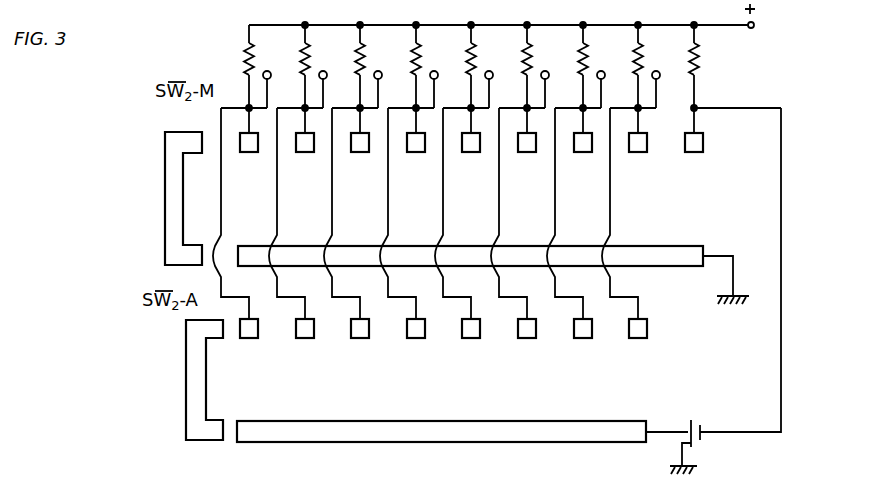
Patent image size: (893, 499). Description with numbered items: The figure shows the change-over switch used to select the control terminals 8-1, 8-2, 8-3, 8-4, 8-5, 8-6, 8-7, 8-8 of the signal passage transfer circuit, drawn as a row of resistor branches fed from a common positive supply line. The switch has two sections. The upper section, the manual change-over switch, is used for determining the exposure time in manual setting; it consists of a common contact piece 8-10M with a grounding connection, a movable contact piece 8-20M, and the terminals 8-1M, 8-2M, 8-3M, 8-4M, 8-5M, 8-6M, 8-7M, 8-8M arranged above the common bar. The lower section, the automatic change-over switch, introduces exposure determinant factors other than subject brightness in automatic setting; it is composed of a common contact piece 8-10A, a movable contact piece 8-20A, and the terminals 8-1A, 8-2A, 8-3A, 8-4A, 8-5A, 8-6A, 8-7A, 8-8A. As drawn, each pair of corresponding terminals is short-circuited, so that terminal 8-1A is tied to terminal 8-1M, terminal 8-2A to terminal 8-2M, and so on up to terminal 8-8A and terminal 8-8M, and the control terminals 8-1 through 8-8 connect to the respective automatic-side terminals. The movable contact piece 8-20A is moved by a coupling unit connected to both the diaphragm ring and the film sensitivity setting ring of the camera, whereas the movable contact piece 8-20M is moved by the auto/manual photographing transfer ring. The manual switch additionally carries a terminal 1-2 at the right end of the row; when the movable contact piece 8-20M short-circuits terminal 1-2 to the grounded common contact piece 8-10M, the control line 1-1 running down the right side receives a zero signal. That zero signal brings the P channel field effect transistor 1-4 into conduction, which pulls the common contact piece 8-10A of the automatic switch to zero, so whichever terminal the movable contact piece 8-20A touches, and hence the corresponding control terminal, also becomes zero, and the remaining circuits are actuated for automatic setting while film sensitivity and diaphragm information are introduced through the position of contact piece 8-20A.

The control terminal 8-8 is at (265, 61).
The control terminal 8-7 is at (321, 61).
The control terminal 8-6 is at (376, 61).
The control terminal 8-5 is at (432, 61).
The control terminal 8-4 is at (487, 61).
The control terminal 8-3 is at (543, 61).
The control terminal 8-2 is at (599, 61).
The control terminal 8-1 is at (654, 61).
The terminal 8-8M is at (251, 152).
The terminal 8-7M is at (307, 152).
The terminal 8-6M is at (362, 152).
The terminal 8-5M is at (418, 152).
The terminal 8-4M is at (473, 152).
The terminal 8-3M is at (529, 152).
The terminal 8-2M is at (585, 152).
The terminal 8-1M is at (640, 152).
The terminal 8-8A is at (251, 338).
The terminal 8-7A is at (307, 338).
The terminal 8-6A is at (362, 338).
The terminal 8-5A is at (418, 338).
The terminal 8-4A is at (473, 338).
The terminal 8-3A is at (529, 338).
The terminal 8-2A is at (585, 338).
The terminal 8-1A is at (640, 338).
The common contact piece 8-10M is at (682, 262).
The common contact piece 8-10A is at (558, 443).
The movable contact piece 8-20M is at (165, 212).
The movable contact piece 8-20A is at (186, 391).
The control line 1-1 is at (782, 177).
The terminal 1-2 is at (696, 152).
The P channel field effect transistor 1-4 is at (701, 447).